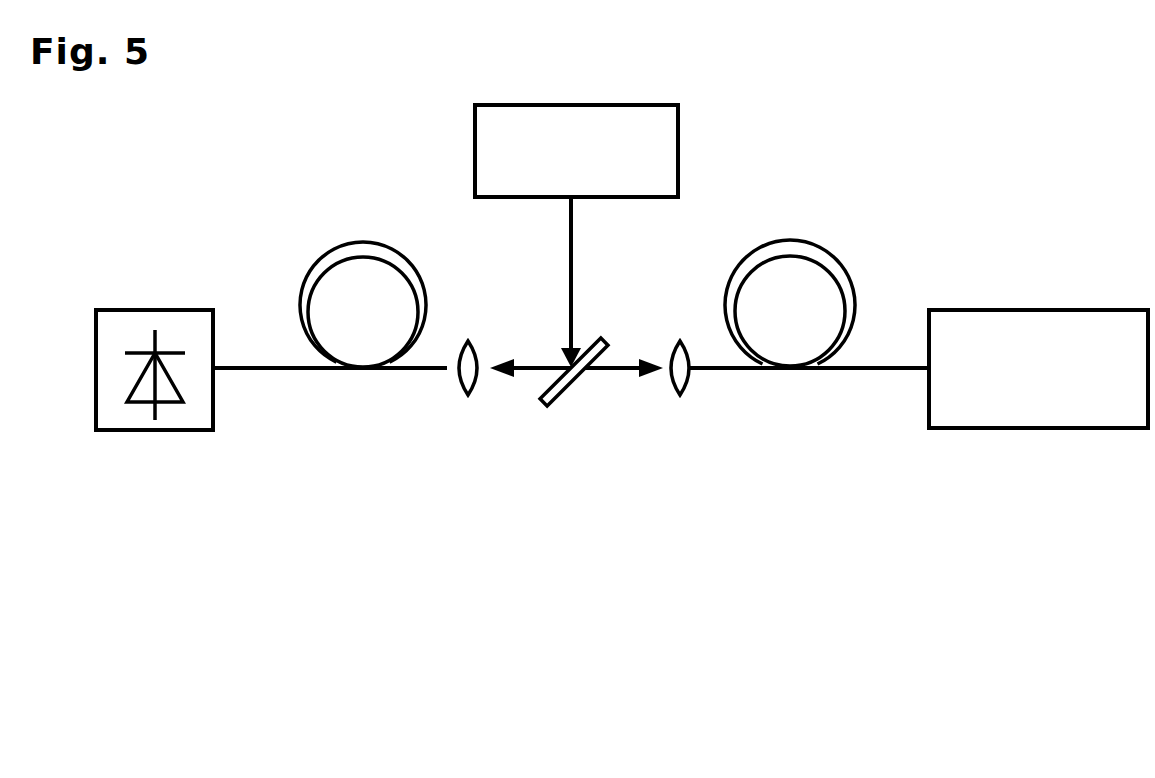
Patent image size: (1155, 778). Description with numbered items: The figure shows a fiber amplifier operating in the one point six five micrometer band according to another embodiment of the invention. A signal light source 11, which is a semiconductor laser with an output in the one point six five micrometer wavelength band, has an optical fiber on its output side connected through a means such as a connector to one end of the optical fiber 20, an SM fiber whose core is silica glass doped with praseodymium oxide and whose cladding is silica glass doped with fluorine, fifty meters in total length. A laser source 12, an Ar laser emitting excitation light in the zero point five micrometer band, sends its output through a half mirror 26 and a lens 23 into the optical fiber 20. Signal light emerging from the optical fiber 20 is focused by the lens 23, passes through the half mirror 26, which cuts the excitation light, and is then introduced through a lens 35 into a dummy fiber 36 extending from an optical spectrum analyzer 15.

The signal light source 11 is at (167, 308).
The laser source 12 is at (585, 103).
The optical spectrum analyzer 15 is at (998, 433).
The optical fiber 20 is at (357, 375).
The lens 23 is at (468, 403).
The half mirror 26 is at (568, 395).
The lens 35 is at (682, 406).
The dummy fiber 36 is at (817, 377).